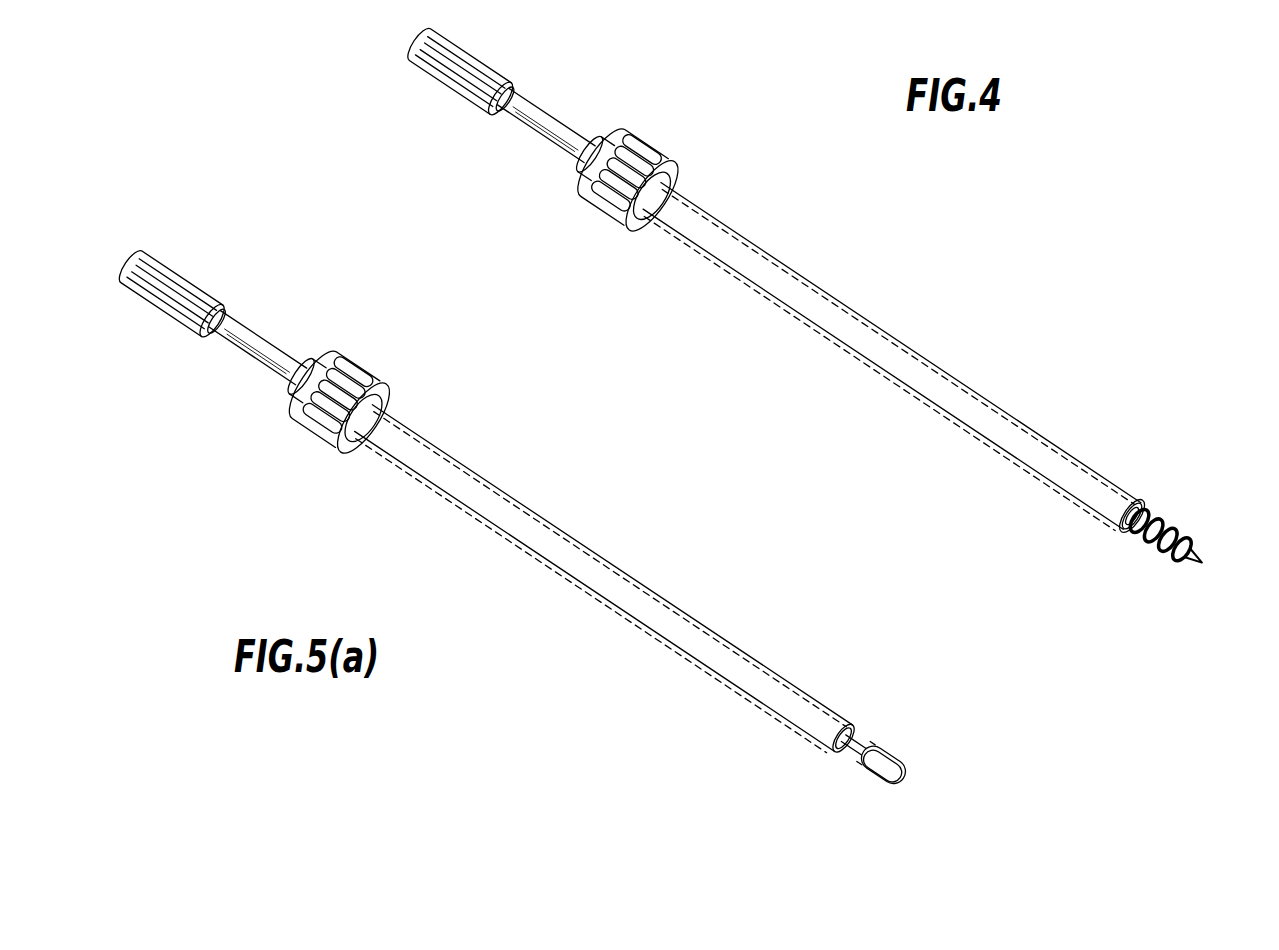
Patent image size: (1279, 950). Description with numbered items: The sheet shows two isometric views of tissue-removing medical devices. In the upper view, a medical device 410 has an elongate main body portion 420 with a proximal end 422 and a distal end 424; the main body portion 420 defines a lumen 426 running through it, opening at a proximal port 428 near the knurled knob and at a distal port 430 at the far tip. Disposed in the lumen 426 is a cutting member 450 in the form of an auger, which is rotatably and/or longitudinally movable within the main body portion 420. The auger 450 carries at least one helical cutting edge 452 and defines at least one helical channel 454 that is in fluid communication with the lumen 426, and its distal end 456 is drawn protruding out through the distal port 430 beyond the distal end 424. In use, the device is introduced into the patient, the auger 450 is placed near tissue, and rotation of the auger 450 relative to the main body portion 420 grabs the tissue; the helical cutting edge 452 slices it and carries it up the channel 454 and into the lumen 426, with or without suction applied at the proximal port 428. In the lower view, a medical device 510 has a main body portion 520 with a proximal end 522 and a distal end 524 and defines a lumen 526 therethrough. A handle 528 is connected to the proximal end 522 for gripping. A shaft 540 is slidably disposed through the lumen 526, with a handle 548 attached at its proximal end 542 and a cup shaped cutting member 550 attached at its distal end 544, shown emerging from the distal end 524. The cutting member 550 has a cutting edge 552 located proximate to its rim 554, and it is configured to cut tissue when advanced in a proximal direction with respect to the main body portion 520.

In FIG. 4, the medical device 410 is at (965, 238).
In FIG. 4, the main body portion 420 is at (793, 293).
In FIG. 4, the proximal end 422 is at (611, 122).
In FIG. 4, the distal end 424 is at (1128, 548).
In FIG. 4, the lumen 426 is at (1012, 428).
In FIG. 4, the proximal port 428 is at (582, 146).
In FIG. 4, the distal port 430 is at (1137, 503).
In FIG. 4, the cutting member 450 is at (1192, 582).
In FIG. 4, the helical cutting edge 452 is at (1172, 567).
In FIG. 4, the helical channel 454 is at (1178, 545).
In FIG. 4, the distal end 456 is at (1223, 532).
In FIG. 5A, the medical device 510 is at (619, 490).
In FIG. 5A, the main body portion 520 is at (495, 503).
In FIG. 5A, the proximal end 522 is at (314, 442).
In FIG. 5A, the distal end 524 is at (830, 759).
In FIG. 5A, the lumen 526 is at (692, 630).
In FIG. 5A, the handle 528 is at (340, 343).
In FIG. 5A, the shaft 540 is at (860, 753).
In FIG. 5A, the proximal end 542 is at (253, 310).
In FIG. 5A, the distal end 544 is at (898, 767).
In FIG. 5A, the handle 548 is at (192, 273).
In FIG. 5A, the cup shaped cutting member 550 is at (868, 782).
In FIG. 5A, the cutting edge 552 is at (877, 740).
In FIG. 5A, the rim 554 is at (888, 735).